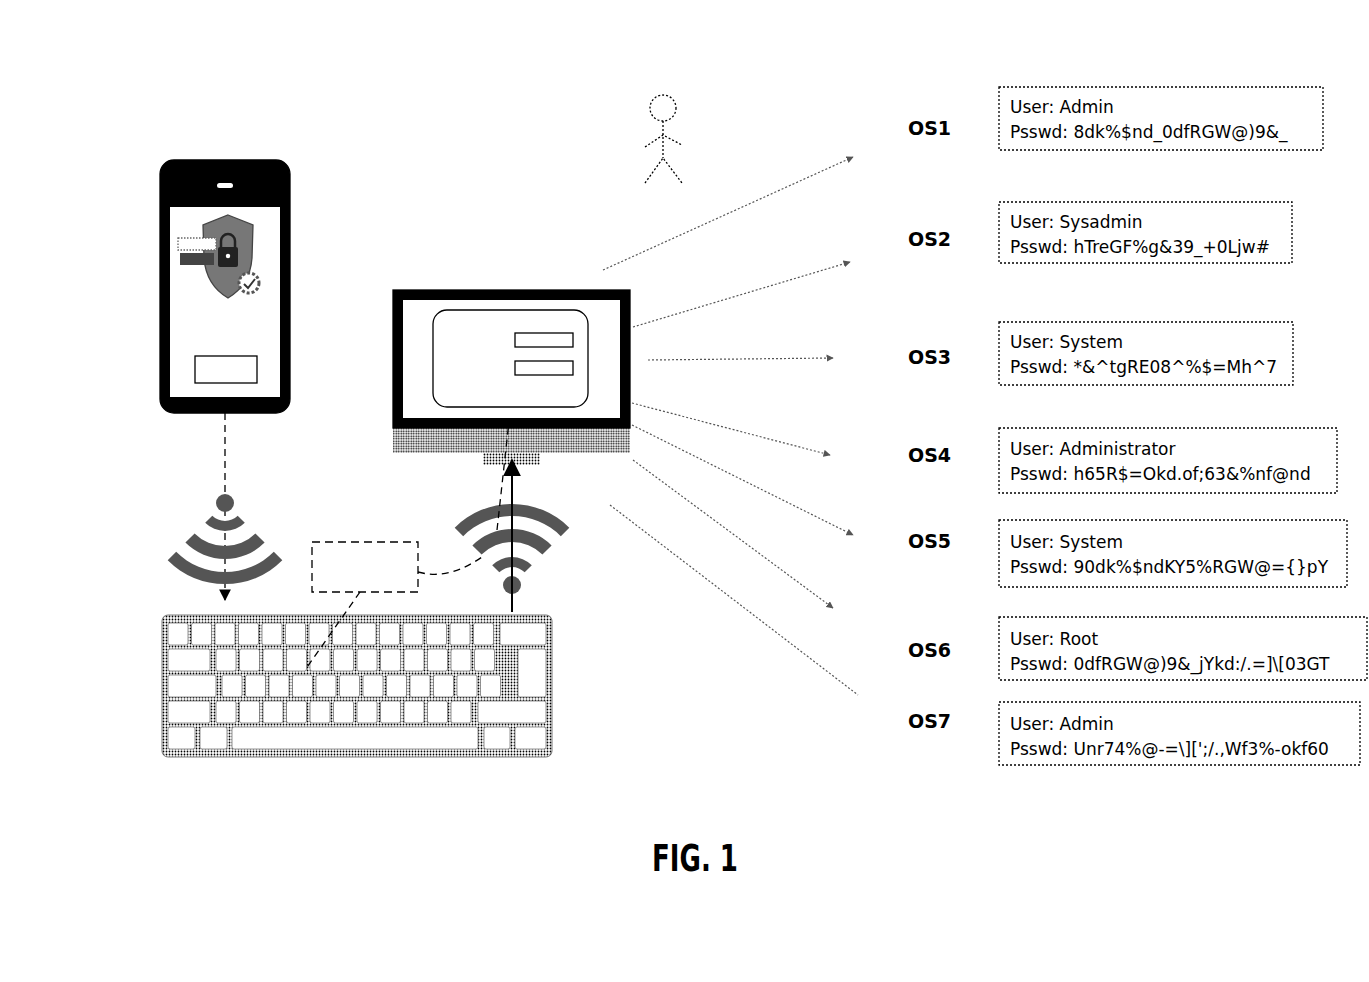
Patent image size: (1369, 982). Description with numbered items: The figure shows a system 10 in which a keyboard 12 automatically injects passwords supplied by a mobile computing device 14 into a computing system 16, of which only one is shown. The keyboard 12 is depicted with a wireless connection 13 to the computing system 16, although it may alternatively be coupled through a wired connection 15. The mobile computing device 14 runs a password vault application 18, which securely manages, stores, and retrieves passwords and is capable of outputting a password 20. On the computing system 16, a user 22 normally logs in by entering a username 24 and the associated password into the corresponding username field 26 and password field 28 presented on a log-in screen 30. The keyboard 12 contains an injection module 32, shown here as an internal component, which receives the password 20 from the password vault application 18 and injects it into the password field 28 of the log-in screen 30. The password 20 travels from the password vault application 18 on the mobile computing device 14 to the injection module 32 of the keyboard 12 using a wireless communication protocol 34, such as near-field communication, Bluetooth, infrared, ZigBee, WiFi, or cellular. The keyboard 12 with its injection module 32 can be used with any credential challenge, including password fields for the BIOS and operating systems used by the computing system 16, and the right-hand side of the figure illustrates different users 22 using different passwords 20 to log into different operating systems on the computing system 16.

The system 10 is at (512, 150).
The keyboard 12 is at (163, 688).
The wireless connection 13 is at (553, 572).
The mobile computing device 14 is at (162, 205).
The wired connection 15 is at (524, 497).
The computing system 16 is at (393, 396).
The password vault application 18 is at (268, 250).
The password 20 is at (315, 429).
The user 22 is at (672, 126).
The username 24 is at (536, 331).
The username field 26 is at (573, 340).
The password field 28 is at (573, 370).
The log-in screen 30 is at (476, 290).
The injection module 32 is at (393, 606).
The wireless communication protocol 34 is at (172, 559).